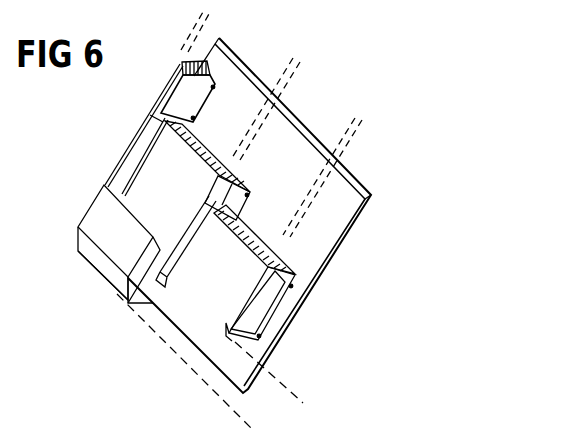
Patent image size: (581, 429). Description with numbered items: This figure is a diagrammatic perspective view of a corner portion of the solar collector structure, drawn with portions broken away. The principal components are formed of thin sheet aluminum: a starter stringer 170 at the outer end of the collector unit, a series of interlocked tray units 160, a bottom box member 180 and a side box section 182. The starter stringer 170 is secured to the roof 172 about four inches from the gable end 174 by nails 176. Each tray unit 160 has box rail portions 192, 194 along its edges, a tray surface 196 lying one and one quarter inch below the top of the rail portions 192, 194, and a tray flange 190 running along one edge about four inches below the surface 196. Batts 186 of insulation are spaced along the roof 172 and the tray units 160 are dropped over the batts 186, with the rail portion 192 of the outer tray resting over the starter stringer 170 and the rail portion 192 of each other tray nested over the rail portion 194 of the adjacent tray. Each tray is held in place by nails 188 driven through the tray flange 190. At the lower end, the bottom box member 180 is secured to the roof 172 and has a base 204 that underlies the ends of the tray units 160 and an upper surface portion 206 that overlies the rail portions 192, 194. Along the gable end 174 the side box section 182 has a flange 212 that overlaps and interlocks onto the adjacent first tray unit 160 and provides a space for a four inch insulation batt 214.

The tray unit 160 is at (185, 159).
The starter stringer 170 is at (214, 66).
The roof 172 is at (342, 247).
The gable end 174 is at (200, 42).
The nails 176 is at (216, 82).
The bottom box member 180 is at (100, 277).
The side box section 182 is at (126, 146).
The insulation batt 186 is at (206, 148).
The nails 188 is at (249, 197).
The tray flange 190 is at (252, 190).
The box rail portion 192 is at (145, 112).
The box rail portion 194 is at (212, 178).
The tray surface 196 is at (170, 215).
The base 204 is at (157, 287).
The upper surface portion 206 is at (97, 222).
The flange 212 is at (132, 180).
The insulation batt 214 is at (183, 62).